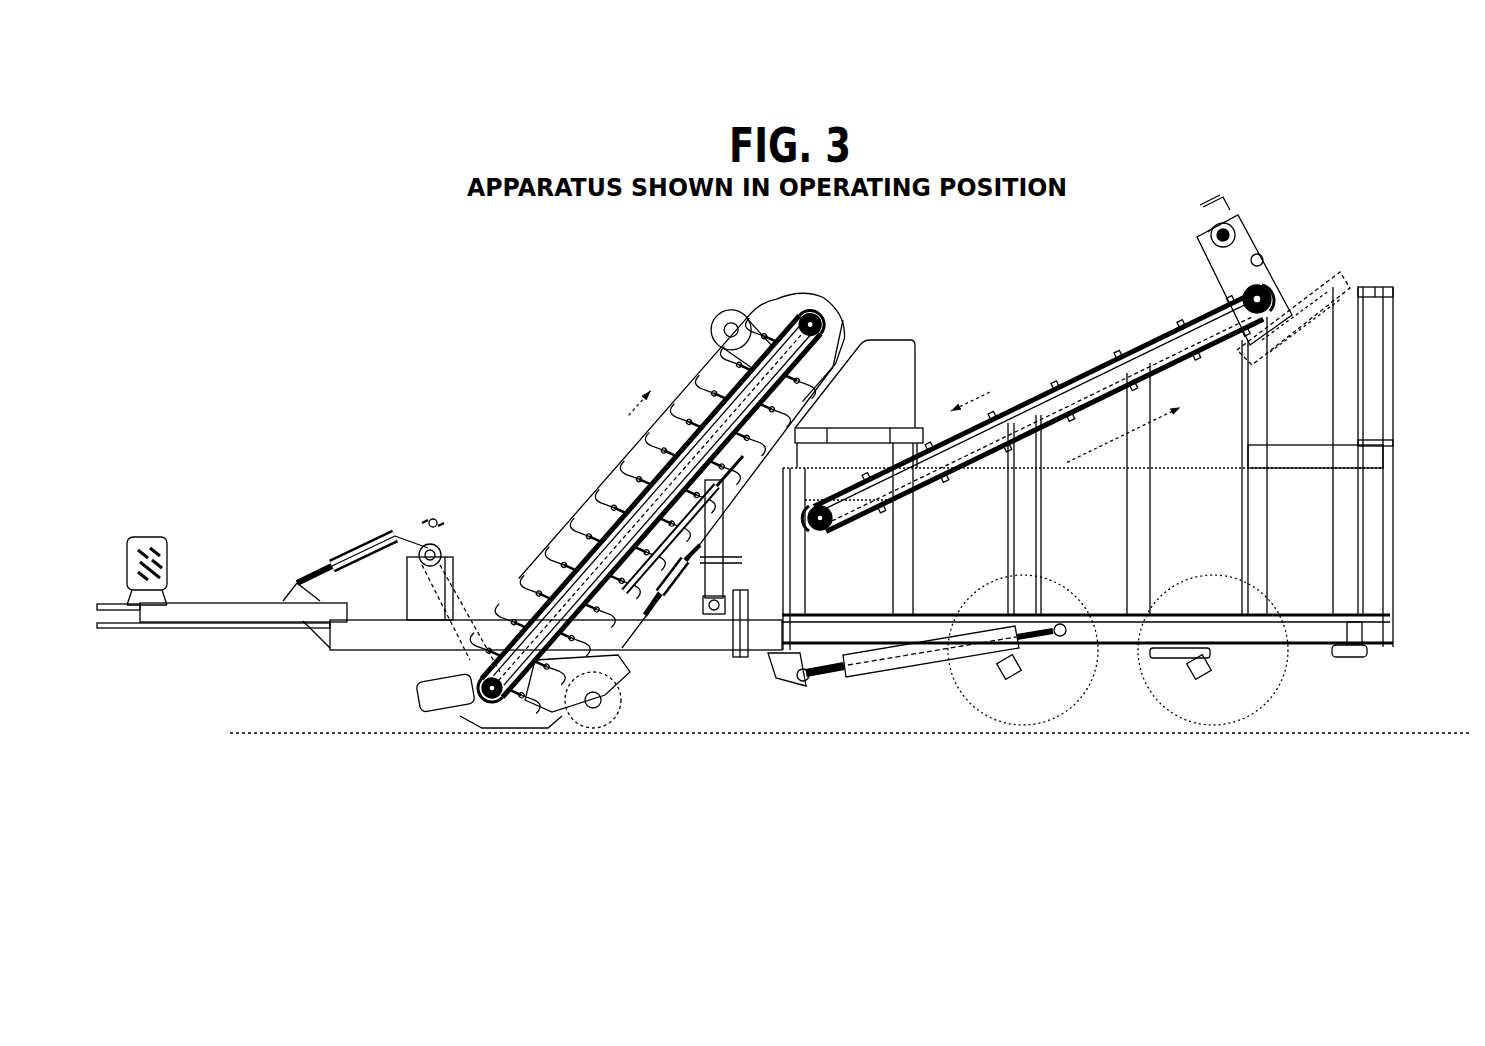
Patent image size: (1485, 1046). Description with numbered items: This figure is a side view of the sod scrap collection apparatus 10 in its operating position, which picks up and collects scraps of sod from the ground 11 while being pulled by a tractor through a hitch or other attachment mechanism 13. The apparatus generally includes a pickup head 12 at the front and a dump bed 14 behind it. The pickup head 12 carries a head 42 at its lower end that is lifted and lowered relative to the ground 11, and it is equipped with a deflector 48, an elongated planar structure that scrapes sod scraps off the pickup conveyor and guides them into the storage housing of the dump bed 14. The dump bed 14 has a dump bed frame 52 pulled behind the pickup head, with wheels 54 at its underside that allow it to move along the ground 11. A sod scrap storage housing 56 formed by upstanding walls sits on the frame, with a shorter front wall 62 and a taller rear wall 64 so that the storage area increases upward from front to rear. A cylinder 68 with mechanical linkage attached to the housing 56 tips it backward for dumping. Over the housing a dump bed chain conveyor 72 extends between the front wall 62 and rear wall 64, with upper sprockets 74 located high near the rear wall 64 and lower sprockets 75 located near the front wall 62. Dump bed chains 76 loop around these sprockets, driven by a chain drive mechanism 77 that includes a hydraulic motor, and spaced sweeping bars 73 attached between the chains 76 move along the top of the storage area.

The sod scrap collection apparatus 10 is at (397, 240).
The ground 11 is at (1330, 727).
The pickup head 12 is at (520, 318).
The hitch or other attachment mechanism 13 is at (178, 537).
The dump bed 14 is at (1045, 303).
The head 42 is at (380, 698).
The deflector 48 is at (792, 560).
The dump bed frame 52 is at (1320, 645).
The wheels 54 is at (1055, 700).
The sod scrap storage housing 56 is at (1080, 545).
The front wall 62 is at (782, 578).
The rear wall 64 is at (1394, 515).
The cylinder 68 is at (912, 660).
The dump bed chain conveyor 72 is at (1152, 320).
The sweeping bars 73 is at (1228, 357).
The upper sprockets 74 is at (1275, 282).
The lower sprockets 75 is at (822, 540).
The dump bed chains 76 is at (1192, 308).
The chain drive mechanism 77 is at (1233, 207).